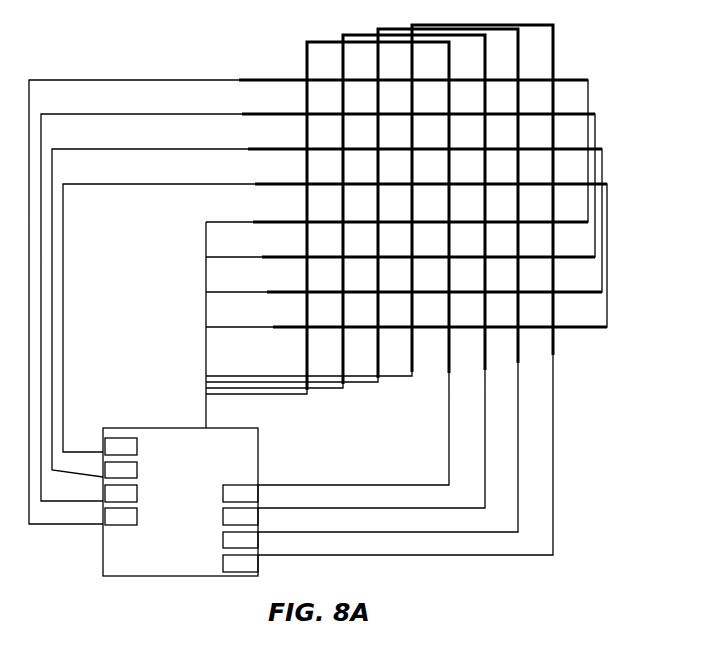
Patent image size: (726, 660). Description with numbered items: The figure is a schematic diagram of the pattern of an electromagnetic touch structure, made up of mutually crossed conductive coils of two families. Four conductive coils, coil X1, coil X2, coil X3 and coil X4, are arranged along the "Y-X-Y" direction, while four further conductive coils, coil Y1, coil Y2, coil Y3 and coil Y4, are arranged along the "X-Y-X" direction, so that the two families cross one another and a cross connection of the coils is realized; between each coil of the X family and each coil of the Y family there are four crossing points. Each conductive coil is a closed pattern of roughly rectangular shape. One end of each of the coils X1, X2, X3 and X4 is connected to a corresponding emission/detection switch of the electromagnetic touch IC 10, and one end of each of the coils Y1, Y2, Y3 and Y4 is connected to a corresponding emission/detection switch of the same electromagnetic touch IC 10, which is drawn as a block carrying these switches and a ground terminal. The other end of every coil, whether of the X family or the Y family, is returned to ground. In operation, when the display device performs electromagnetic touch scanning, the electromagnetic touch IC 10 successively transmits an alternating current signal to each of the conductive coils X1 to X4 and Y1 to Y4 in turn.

The electromagnetic touch IC 10 is at (180, 502).
The conductive coil X1 is at (327, 263).
The conductive coil X2 is at (345, 272).
The conductive coil X3 is at (362, 280).
The conductive coil X4 is at (379, 290).
The conductive coil Y1 is at (308, 294).
The conductive coil Y2 is at (318, 299).
The conductive coil Y3 is at (327, 305).
The conductive coil Y4 is at (335, 309).